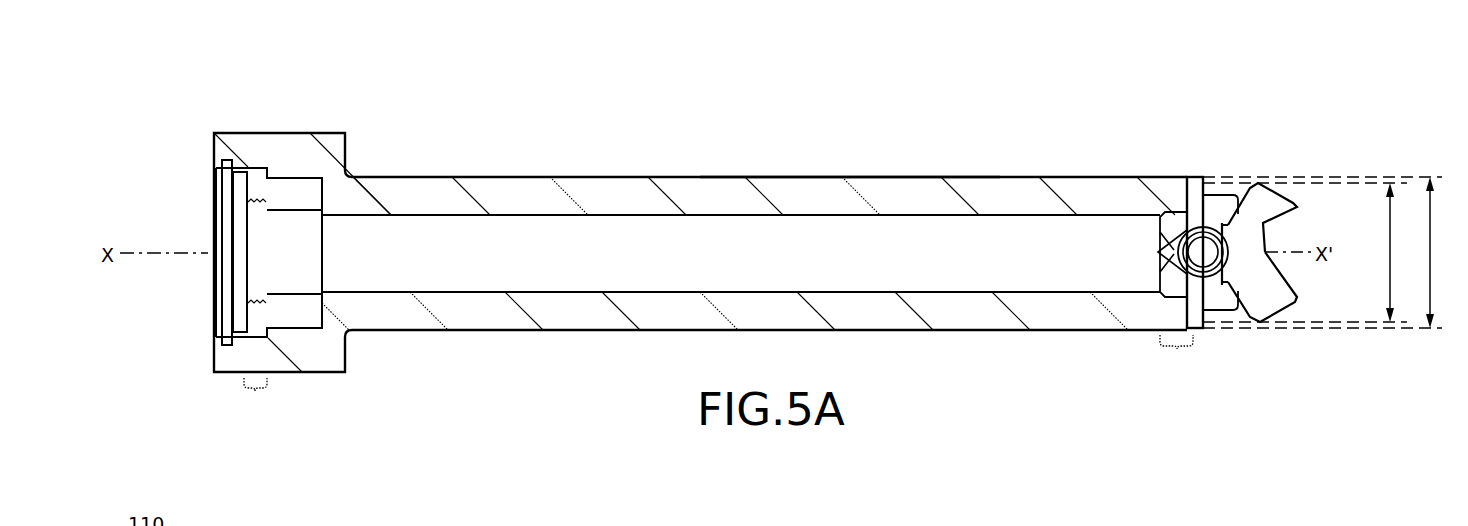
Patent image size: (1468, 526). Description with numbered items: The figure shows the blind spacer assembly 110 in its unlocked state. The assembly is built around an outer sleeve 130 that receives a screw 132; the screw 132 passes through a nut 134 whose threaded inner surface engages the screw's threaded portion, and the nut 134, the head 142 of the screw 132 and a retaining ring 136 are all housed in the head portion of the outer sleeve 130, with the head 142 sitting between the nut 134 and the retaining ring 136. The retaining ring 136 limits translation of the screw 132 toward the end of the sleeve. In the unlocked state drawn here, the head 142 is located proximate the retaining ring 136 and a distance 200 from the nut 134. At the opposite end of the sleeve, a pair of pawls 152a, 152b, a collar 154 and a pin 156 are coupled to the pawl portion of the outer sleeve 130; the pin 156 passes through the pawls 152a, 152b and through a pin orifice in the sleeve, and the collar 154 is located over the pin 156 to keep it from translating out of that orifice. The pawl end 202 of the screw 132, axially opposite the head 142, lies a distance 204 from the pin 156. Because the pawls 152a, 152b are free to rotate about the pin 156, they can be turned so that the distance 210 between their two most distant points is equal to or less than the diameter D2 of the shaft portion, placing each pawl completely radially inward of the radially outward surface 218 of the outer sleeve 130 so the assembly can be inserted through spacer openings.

The blind spacer assembly 110 is at (196, 89).
The outer sleeve 130 is at (410, 193).
The screw 132 is at (613, 237).
The nut 134 is at (292, 197).
The retaining ring 136 is at (227, 227).
The head 142 is at (242, 188).
The collar 154 is at (1195, 187).
The pin 156 is at (1207, 258).
The pawl 152a is at (1262, 219).
The pawl 152b is at (1275, 287).
The distance 200 is at (256, 403).
The pawl end 202 is at (1183, 213).
The distance 204 is at (1180, 359).
The distance 210 is at (1306, 252).
The radially outward surface 218 is at (891, 177).
The diameter D2 is at (1323, 252).